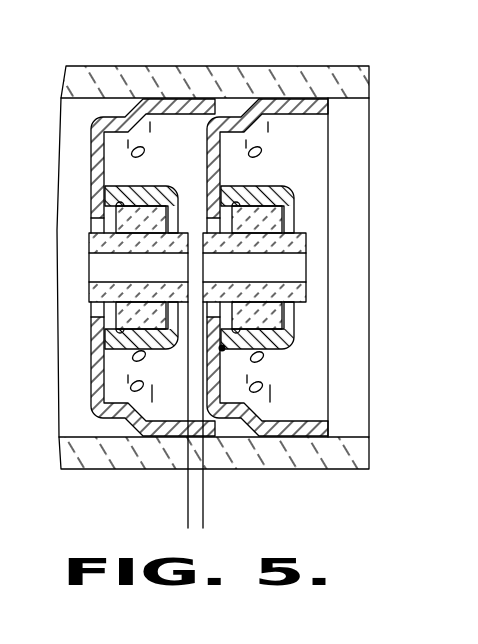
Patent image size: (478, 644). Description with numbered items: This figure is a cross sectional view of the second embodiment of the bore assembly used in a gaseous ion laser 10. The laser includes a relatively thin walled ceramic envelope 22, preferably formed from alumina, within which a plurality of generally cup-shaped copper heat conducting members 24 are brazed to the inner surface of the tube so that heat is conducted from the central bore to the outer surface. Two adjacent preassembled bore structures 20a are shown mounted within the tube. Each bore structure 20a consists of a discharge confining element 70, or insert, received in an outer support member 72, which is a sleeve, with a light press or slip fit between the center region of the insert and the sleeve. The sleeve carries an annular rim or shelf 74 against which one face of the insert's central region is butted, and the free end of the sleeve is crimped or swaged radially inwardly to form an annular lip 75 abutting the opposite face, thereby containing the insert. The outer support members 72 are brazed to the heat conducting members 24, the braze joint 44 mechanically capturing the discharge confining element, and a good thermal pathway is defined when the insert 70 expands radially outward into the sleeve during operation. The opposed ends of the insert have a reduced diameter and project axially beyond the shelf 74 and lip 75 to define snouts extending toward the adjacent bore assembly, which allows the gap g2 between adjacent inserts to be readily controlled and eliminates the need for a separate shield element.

The gaseous ion laser 10 is at (161, 53).
The ceramic envelope 22 is at (236, 68).
The heat conducting member 24 is at (314, 142).
The braze joint 44 is at (108, 180).
The annular lip 75 is at (297, 203).
The bore structure 20a is at (312, 222).
The discharge confining element 70 is at (268, 298).
The outer support member 72 is at (238, 348).
The annular shelf 74 is at (224, 350).
The gap g2 is at (163, 518).